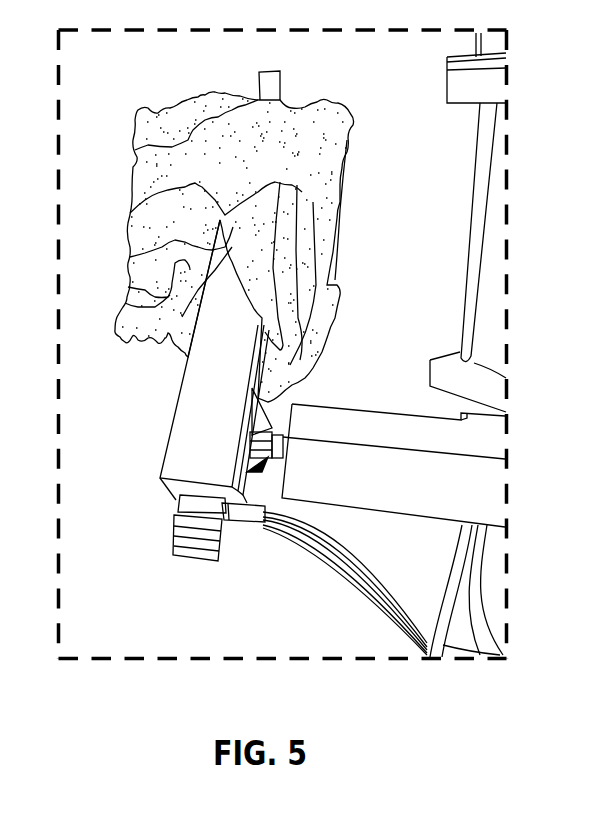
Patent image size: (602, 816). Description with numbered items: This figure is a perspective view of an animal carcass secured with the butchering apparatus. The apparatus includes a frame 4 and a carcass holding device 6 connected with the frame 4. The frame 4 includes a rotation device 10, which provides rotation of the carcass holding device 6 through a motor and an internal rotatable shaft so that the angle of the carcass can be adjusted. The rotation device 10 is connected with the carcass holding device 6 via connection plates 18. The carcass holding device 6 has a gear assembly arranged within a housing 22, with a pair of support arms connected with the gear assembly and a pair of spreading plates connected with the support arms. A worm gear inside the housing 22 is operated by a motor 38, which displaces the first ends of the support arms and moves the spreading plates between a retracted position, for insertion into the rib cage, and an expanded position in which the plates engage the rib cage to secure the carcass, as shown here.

The frame 4 is at (477, 83).
The carcass holding device 6 is at (132, 394).
The rotation device 10 is at (432, 493).
The connection plates 18 is at (257, 410).
The housing 22 is at (198, 452).
The motor 38 is at (195, 563).